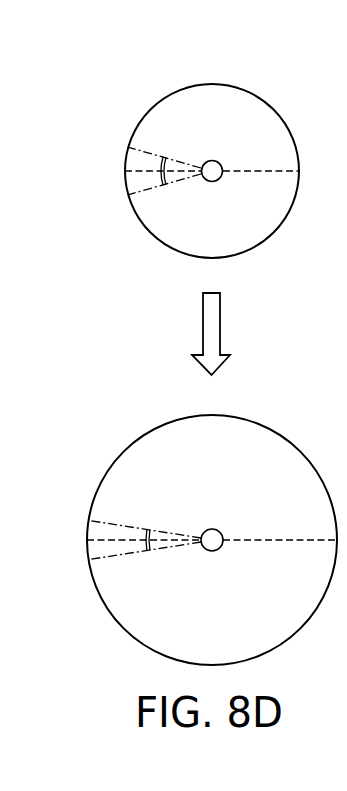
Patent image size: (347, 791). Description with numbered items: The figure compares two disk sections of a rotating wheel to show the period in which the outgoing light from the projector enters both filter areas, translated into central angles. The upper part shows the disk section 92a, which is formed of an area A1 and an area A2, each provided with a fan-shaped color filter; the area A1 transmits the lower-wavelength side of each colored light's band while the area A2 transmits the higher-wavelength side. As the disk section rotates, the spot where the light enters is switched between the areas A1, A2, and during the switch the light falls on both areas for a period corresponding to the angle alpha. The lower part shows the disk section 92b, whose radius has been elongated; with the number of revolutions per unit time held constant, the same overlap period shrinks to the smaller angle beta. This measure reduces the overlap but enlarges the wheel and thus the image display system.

The disk section 92a is at (284, 123).
The disk section 92b is at (283, 434).
The area A1 is at (213, 131).
The area A2 is at (213, 211).